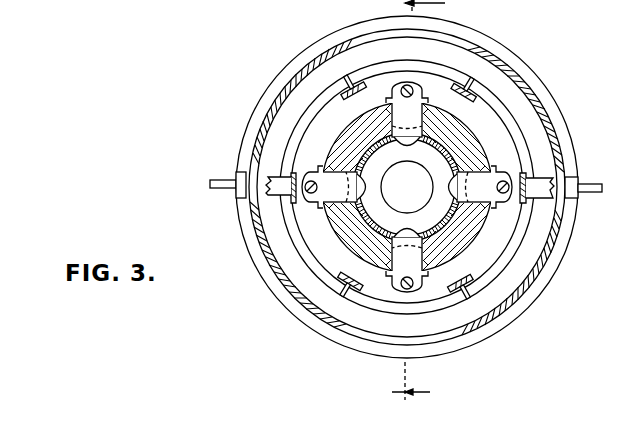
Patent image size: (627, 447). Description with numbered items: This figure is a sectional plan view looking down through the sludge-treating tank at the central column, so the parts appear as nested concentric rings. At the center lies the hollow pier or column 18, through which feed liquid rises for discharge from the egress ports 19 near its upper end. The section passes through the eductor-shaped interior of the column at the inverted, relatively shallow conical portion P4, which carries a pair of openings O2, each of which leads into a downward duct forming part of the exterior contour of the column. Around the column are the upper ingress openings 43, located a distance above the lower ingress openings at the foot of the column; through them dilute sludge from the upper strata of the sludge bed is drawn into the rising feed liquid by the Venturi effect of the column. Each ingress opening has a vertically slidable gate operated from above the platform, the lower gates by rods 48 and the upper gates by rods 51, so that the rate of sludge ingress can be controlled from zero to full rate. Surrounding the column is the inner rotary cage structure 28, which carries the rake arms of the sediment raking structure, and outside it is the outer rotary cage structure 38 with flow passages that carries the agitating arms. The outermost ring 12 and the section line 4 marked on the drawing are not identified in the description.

The motor housing 12 is at (411, 179).
The outer rotary cage structure 38 is at (535, 88).
The hollow pier or column 18 is at (457, 127).
The upper ingress openings 43 is at (477, 152).
The rod 48 is at (316, 167).
The rod 51 is at (413, 88).
The discharge or egress ports 19 is at (410, 122).
The inner rotary cage structure 28 is at (270, 178).
The inverted shallow conical portion P4 is at (377, 218).
The openings O2 is at (438, 190).
The section line 4- 4 is at (425, 200).